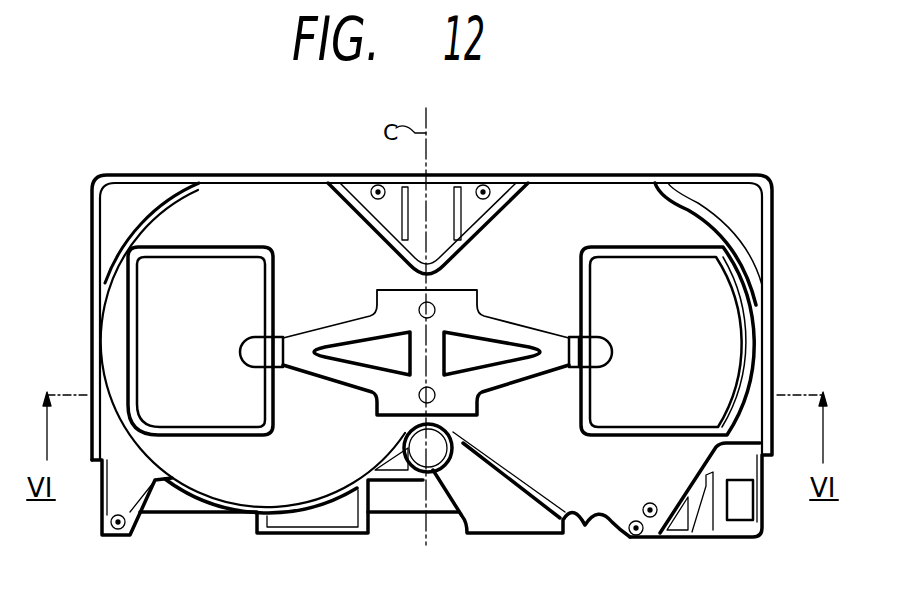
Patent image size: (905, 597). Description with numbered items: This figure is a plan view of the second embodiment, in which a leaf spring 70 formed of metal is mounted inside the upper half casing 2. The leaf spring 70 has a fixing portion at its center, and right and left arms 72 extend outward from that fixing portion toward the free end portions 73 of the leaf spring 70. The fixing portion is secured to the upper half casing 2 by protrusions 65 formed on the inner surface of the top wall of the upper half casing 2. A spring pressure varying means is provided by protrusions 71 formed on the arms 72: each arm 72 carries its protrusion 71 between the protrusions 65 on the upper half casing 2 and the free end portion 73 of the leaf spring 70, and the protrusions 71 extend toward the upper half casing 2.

The upper half casing 2 is at (603, 165).
The protrusions 65 is at (420, 400).
The leaf spring 70 is at (512, 396).
The protrusions 71 is at (282, 337).
The arms 72 is at (350, 322).
The free end portions 73 is at (253, 345).